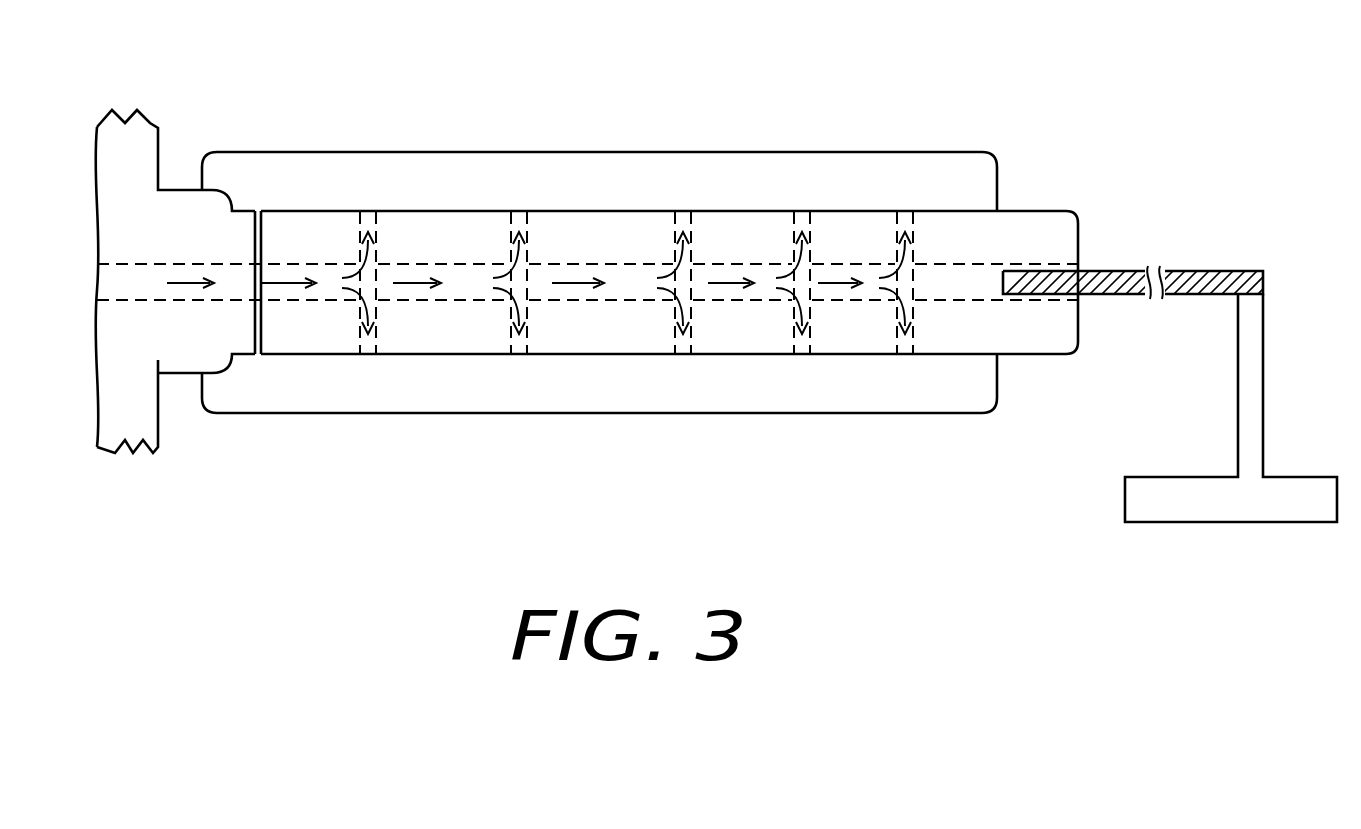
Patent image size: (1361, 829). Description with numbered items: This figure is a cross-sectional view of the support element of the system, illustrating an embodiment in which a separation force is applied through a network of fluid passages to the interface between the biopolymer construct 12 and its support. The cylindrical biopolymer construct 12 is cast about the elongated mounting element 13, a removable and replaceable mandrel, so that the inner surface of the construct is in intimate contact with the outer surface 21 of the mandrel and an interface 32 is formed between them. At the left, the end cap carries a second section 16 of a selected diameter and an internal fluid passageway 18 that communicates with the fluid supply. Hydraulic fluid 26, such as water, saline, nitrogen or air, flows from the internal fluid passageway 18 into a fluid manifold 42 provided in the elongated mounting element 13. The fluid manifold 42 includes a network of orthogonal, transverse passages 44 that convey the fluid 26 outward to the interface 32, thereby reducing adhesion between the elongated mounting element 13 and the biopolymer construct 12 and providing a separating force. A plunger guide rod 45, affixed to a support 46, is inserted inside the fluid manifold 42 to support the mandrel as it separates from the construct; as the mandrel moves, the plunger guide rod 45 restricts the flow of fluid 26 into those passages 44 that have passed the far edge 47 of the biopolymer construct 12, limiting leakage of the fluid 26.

The biopolymer construct 12 is at (553, 195).
The elongated mounting element 13 is at (1015, 310).
The second section 16 is at (138, 425).
The internal fluid passageway 18 is at (123, 266).
The outer surface 21 is at (1048, 355).
The hydraulic fluid 26 is at (190, 267).
The interface 32 is at (997, 211).
The fluid manifold 42 is at (337, 284).
The passages 44 is at (693, 350).
The plunger guide rod 45 is at (1120, 270).
The support 46 is at (253, 253).
The far edge 47 is at (997, 167).